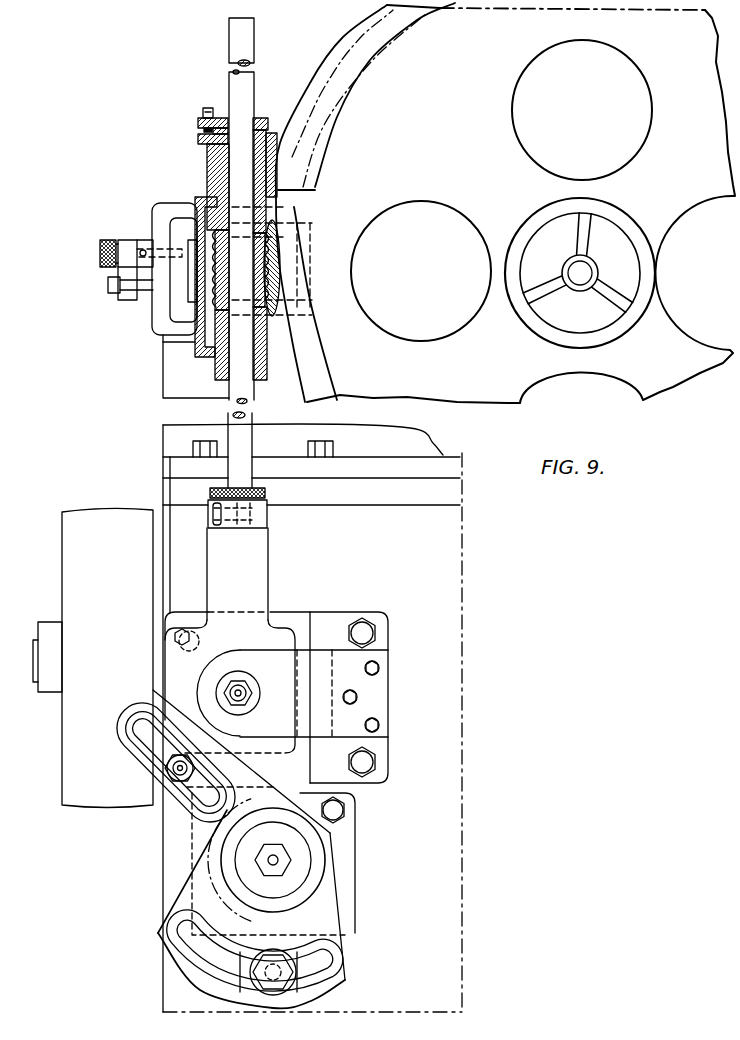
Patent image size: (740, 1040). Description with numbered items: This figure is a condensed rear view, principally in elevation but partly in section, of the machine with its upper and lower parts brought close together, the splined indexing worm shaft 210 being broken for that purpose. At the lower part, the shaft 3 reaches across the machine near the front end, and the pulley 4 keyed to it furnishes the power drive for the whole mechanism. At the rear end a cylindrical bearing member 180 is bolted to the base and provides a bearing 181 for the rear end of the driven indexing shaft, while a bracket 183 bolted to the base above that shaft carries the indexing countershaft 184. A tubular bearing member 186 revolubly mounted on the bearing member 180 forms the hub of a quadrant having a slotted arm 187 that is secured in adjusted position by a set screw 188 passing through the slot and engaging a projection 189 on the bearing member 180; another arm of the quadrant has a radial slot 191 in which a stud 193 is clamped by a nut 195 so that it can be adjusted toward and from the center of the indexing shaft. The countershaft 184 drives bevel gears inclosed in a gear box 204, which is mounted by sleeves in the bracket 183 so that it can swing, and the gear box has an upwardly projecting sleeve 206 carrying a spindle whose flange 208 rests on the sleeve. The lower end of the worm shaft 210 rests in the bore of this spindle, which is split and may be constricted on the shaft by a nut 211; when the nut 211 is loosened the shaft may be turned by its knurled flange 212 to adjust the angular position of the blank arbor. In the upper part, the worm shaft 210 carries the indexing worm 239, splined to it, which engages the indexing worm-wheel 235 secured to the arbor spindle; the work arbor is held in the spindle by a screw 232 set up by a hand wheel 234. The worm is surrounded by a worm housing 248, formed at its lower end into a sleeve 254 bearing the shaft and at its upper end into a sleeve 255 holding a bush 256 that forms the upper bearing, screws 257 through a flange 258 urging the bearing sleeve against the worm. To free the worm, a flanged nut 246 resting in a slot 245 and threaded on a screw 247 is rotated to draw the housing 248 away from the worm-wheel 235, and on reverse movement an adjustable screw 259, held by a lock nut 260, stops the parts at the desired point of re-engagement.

The shaft 3 is at (37, 655).
The pulley 4 is at (73, 517).
The cylindrical bearing member 180 is at (307, 860).
The bearing 181 is at (287, 860).
The bracket 183 is at (337, 620).
The indexing countershaft 184 is at (233, 693).
The tubular bearing member 186 is at (320, 878).
The slotted arm 187 is at (183, 967).
The set screw 188 is at (273, 990).
The projection 189 is at (297, 970).
The radial slot 191 is at (197, 790).
The stud 193 is at (177, 768).
The nut 195 is at (170, 797).
The gear box 204 is at (193, 647).
The upwardly projecting sleeve 206 is at (263, 570).
The flange 208 is at (267, 515).
The indexing worm shaft 210 is at (247, 43).
The nut 211 is at (213, 515).
The knurled flange 212 is at (267, 495).
The screw 232 is at (578, 280).
The hand wheel 234 is at (625, 328).
The indexing worm-wheel 235 is at (521, 204).
The indexing worm 239 is at (212, 277).
The slot 245 is at (133, 240).
The flanged nut 246 is at (108, 240).
The screw 247 is at (100, 253).
The worm housing 248 is at (200, 333).
The sleeve 254 is at (220, 368).
The sleeve 255 is at (277, 160).
The bush 256 is at (258, 115).
The screws 257 is at (208, 108).
The flange 258 is at (198, 122).
The screw 259 is at (110, 283).
The lock nut 260 is at (113, 293).